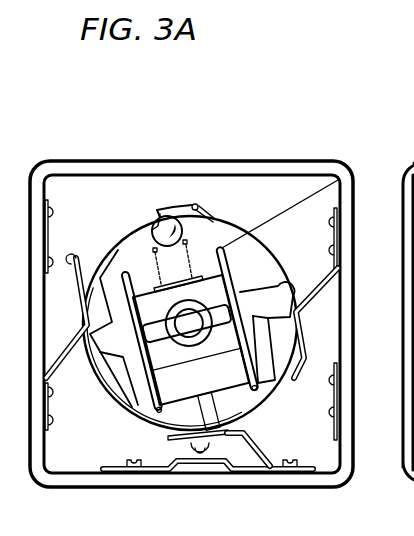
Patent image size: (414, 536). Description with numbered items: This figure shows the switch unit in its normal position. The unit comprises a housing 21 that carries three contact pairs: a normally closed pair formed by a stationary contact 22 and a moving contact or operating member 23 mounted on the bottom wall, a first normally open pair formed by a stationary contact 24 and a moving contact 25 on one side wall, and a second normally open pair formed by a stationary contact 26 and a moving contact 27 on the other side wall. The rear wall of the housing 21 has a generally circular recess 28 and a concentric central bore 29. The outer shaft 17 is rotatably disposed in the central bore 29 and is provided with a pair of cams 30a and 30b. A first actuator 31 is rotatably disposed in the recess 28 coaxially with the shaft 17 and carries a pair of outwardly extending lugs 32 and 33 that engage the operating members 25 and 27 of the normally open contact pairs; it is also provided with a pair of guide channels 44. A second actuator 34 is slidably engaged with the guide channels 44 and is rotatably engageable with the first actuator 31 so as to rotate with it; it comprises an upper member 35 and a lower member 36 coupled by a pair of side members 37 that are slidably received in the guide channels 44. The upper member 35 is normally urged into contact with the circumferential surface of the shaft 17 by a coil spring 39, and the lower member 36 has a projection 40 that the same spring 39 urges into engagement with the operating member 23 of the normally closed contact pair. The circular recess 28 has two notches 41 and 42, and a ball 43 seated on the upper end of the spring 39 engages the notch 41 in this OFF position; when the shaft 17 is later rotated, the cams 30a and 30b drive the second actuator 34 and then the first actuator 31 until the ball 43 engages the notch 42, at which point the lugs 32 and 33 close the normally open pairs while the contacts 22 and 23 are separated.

The outer shaft 17 is at (201, 338).
The housing 21 is at (277, 162).
The stationary contact 22 is at (210, 458).
The moving contact or operating member 23 is at (197, 447).
The stationary contact 24 is at (52, 252).
The moving contact 25 is at (72, 268).
The stationary contact 26 is at (335, 392).
The moving contact 27 is at (305, 370).
The circular recess 28 is at (261, 241).
The central bore 29 is at (197, 343).
The cam 30a is at (140, 337).
The cam 30b is at (264, 390).
The first actuator 31 is at (222, 248).
The lug 32 is at (100, 354).
The lug 33 is at (294, 291).
The second actuator 34 is at (194, 401).
The upper member 35 is at (338, 180).
The lower member 36 is at (168, 433).
The side member 37 is at (262, 279).
The coil spring 39 is at (152, 248).
The projection 40 is at (205, 452).
The notch 41 is at (157, 209).
The notch 42 is at (195, 204).
The ball 43 is at (172, 214).
The guide channel 44 is at (240, 230).